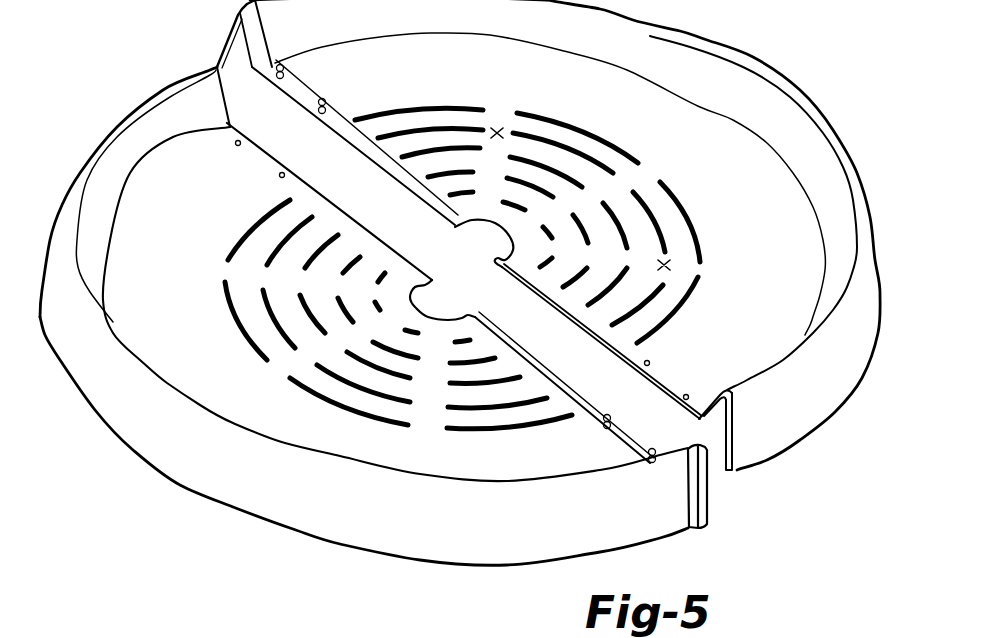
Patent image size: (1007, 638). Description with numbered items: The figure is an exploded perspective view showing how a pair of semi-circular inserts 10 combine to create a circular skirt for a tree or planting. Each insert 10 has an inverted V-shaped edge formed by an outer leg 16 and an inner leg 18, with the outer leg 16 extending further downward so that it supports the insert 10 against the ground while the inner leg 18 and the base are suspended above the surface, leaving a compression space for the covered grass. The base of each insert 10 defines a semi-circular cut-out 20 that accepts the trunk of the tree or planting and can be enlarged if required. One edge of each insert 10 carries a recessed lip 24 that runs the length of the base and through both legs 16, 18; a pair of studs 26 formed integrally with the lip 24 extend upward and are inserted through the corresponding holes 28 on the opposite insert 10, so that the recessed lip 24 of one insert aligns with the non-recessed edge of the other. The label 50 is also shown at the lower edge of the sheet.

The semi-circular insert 10 is at (680, 60).
The outer leg 16 is at (733, 437).
The inner leg 18 is at (732, 398).
The semi-circular cut-out 20 is at (495, 238).
The recessed lip 24 is at (384, 166).
The studs 26 is at (312, 107).
The holes 28 is at (280, 177).
The element 50 is at (378, 636).